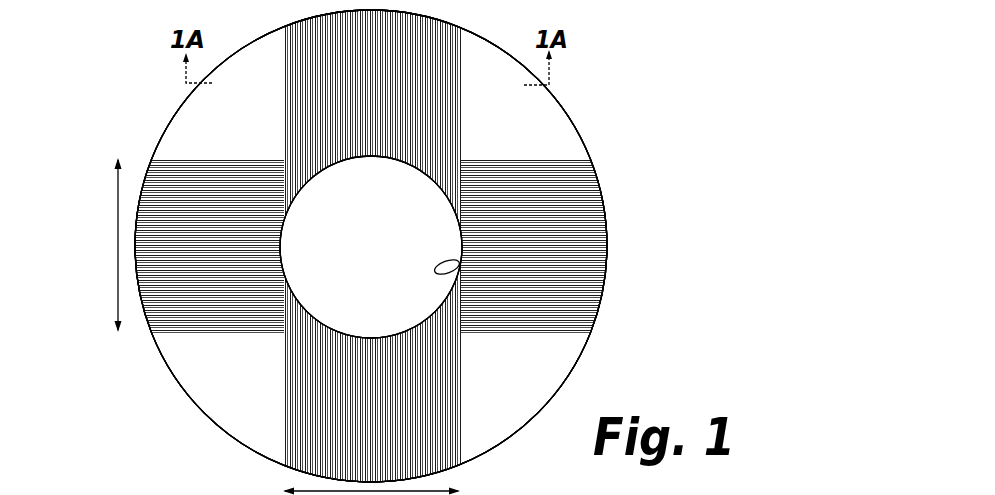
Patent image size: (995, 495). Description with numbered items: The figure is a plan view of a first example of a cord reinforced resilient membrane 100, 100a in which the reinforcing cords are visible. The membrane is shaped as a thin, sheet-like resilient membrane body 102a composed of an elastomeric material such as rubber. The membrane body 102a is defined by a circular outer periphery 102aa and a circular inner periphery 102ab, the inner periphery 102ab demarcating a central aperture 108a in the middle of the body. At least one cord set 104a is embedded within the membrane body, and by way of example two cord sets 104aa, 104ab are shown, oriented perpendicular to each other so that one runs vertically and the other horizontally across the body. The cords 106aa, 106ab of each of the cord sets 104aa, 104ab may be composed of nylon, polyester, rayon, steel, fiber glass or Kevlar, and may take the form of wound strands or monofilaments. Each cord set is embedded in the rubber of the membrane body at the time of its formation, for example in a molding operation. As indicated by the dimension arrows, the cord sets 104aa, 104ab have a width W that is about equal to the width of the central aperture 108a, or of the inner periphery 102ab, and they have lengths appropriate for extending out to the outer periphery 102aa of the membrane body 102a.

The cord reinforced resilient membrane 100 is at (612, 110).
The cord reinforced resilient membrane 100a is at (430, 246).
The membrane body 102a is at (157, 120).
The outer periphery 102aa is at (583, 143).
The inner periphery 102ab is at (455, 268).
The cord set 104a is at (478, 111).
The cord set 104aa is at (265, 404).
The cord set 104ab is at (562, 145).
The cords 106aa is at (435, 395).
The cords 106ab is at (186, 199).
The central aperture 108a is at (312, 301).
The width W is at (118, 242).